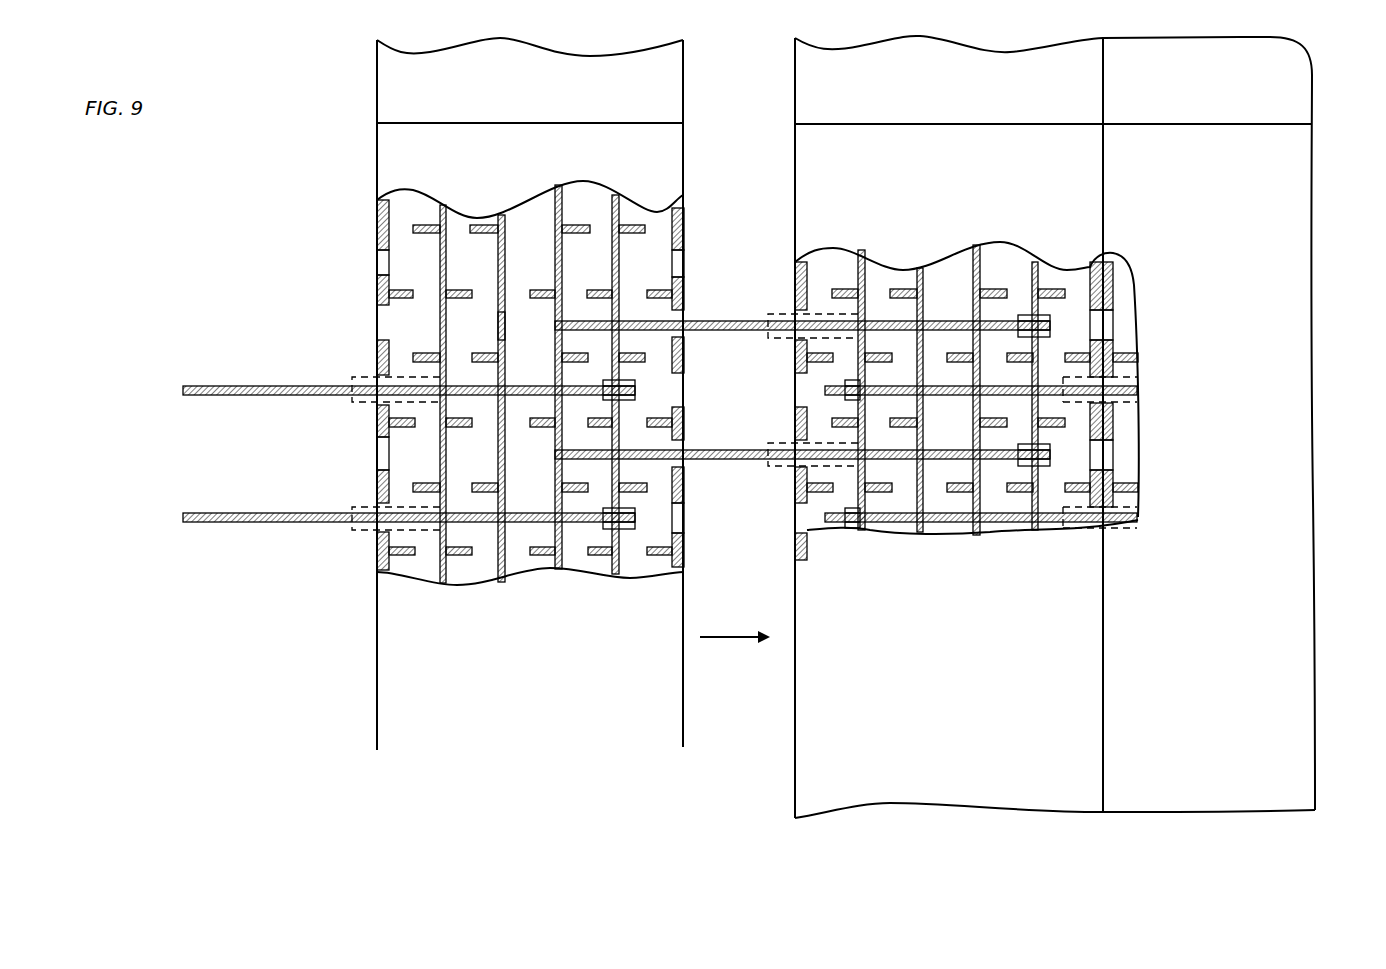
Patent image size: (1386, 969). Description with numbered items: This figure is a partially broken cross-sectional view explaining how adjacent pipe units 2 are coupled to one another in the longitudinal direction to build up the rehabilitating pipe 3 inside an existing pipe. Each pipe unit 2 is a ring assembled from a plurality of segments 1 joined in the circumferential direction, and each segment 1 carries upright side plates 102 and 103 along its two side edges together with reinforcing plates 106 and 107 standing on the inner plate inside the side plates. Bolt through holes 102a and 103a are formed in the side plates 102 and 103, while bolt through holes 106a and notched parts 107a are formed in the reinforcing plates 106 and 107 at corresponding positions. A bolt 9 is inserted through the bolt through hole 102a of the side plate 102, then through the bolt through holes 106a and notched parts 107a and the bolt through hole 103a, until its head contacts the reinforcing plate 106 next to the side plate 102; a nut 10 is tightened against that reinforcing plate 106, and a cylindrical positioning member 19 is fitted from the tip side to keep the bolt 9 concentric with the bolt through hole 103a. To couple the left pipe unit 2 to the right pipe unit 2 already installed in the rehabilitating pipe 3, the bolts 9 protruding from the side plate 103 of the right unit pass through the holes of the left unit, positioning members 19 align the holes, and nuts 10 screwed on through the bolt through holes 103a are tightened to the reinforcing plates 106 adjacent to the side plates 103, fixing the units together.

The segment 1 is at (406, 172).
The pipe unit 2 is at (377, 736).
The rehabilitating pipe 3 is at (1170, 835).
The bolt 9 is at (481, 525).
The nut 10 is at (610, 530).
The positioning member 19 is at (357, 530).
The side plate 102 is at (685, 492).
The bolt through hole 102a is at (683, 520).
The side plate 103 is at (380, 489).
The bolt through hole 103a is at (383, 455).
The reinforcing plate 106 is at (497, 290).
The bolt through hole 106a is at (620, 266).
The reinforcing plate 107 is at (558, 340).
The notched part 107a is at (497, 325).